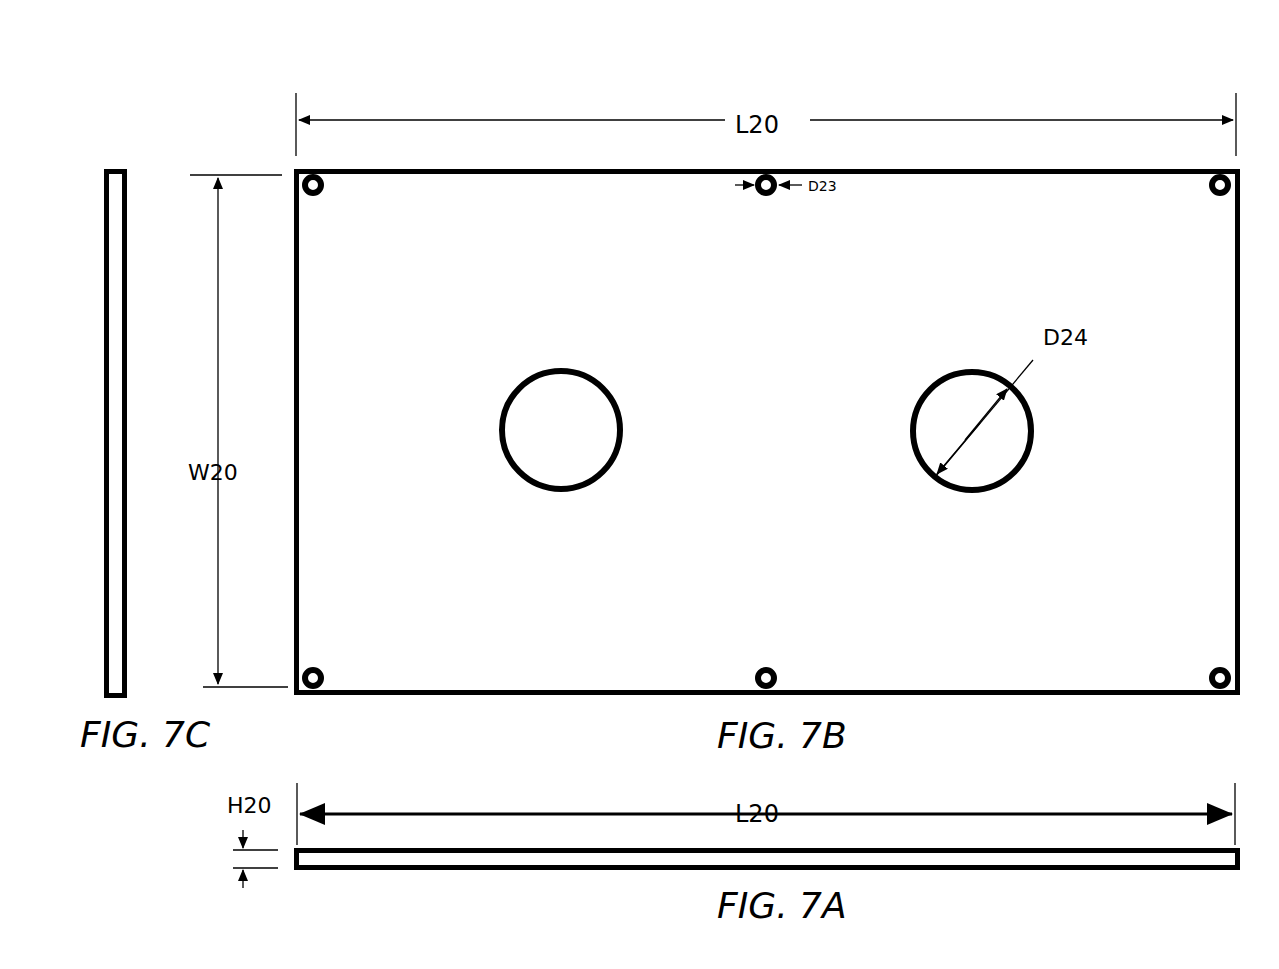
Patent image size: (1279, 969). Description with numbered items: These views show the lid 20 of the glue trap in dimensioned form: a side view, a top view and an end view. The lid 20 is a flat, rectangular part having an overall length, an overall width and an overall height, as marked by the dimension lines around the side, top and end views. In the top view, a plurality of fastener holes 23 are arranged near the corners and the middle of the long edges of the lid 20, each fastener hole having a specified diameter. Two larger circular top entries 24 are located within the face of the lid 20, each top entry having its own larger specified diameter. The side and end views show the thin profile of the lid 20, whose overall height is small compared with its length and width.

In FIG. 7B, the lid 20 is at (428, 89).
In FIG. 7C, the lid 20 is at (147, 176).
In FIG. 7A, the lid 20 is at (458, 785).
In FIG. 7B, the fastener holes 23 is at (326, 674).
In FIG. 7B, the top entries 24 is at (766, 430).